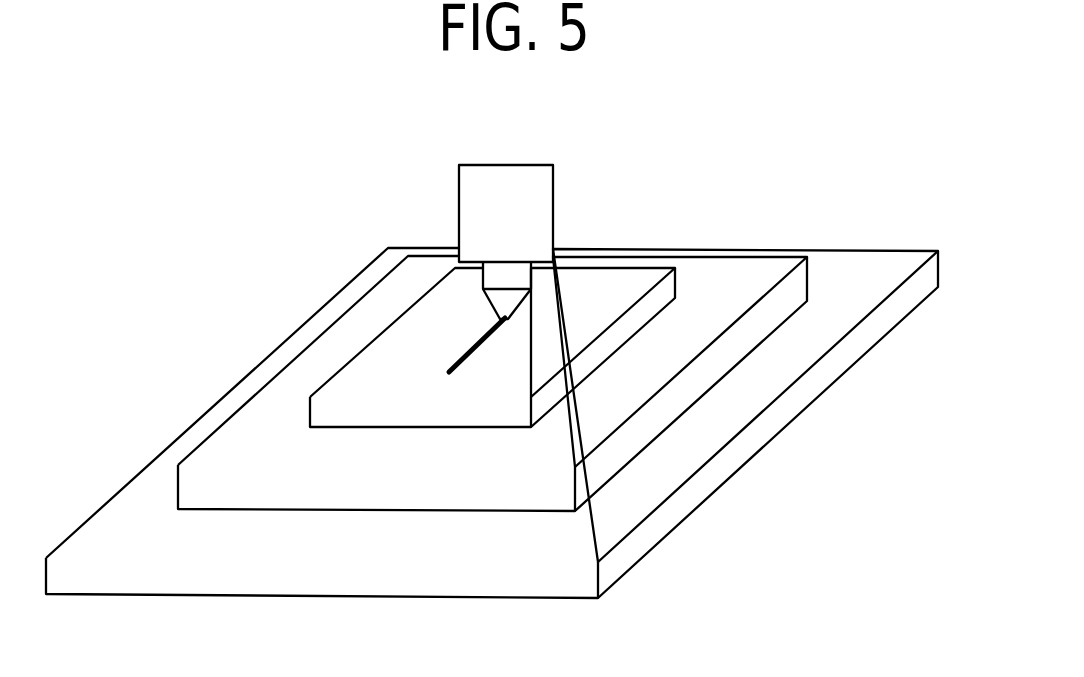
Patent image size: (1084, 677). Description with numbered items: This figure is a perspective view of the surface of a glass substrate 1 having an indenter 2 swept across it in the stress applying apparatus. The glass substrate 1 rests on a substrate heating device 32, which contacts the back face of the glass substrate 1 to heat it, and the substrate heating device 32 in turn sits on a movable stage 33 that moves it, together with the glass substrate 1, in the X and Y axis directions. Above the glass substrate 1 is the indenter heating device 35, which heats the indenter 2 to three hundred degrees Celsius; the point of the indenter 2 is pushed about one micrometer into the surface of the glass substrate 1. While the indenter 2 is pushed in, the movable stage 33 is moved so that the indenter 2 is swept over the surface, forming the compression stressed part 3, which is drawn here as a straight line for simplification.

The glass substrate 1 is at (374, 357).
The indenter 2 is at (508, 302).
The compression stressed part 3 is at (470, 348).
The substrate heating device 32 is at (283, 405).
The movable stage 33 is at (182, 435).
The indenter heating device 35 is at (537, 203).